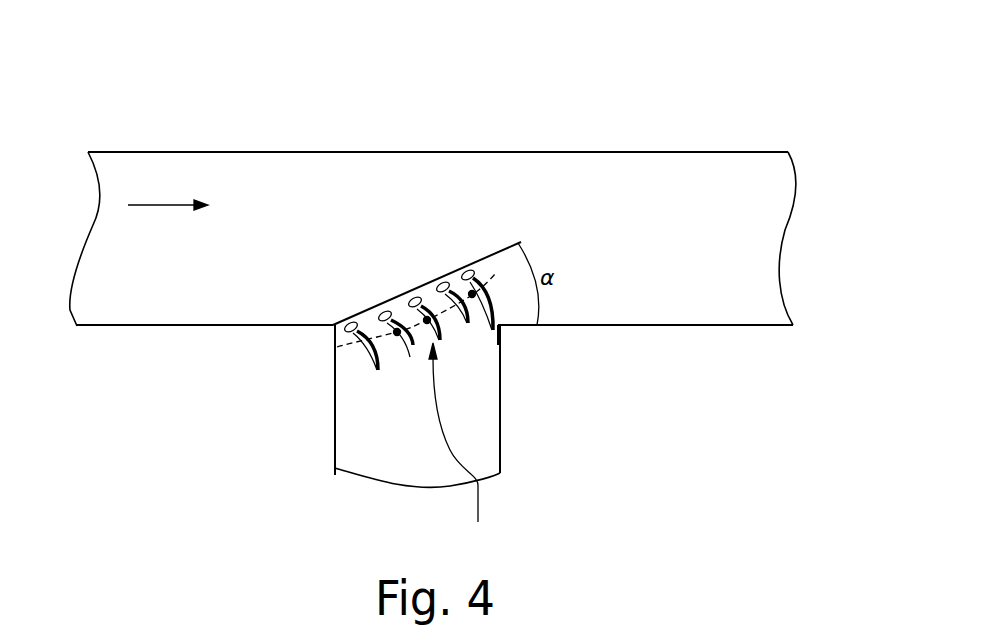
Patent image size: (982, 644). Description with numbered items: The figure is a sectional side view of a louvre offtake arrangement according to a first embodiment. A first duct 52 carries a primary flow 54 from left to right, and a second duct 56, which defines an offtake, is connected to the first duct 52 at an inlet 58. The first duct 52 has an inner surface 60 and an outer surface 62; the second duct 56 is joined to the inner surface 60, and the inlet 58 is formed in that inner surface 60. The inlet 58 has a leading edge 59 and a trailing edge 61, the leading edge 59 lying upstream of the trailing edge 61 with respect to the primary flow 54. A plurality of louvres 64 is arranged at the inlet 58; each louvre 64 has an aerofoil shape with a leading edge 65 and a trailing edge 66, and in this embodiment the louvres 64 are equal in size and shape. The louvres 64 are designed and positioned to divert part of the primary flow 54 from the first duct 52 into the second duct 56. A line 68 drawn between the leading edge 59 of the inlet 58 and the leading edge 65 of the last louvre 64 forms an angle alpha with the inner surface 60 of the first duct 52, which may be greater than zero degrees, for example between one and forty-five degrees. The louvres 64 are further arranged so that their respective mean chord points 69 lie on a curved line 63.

The first duct 52 is at (318, 210).
The primary flow 54 is at (158, 205).
The second duct 56 is at (425, 460).
The inlet 58 is at (461, 448).
The leading edge of the inlet 59 is at (334, 327).
The inner surface 60 is at (709, 325).
The trailing edge of the inlet 61 is at (502, 328).
The outer surface 62 is at (702, 152).
The curved line 63 is at (468, 323).
The louvre 64 is at (345, 328).
The leading edge of the louvre 65 is at (412, 300).
The trailing edge of the louvre 66 is at (410, 357).
The line 68 is at (510, 242).
The mean chord point 69 is at (470, 290).